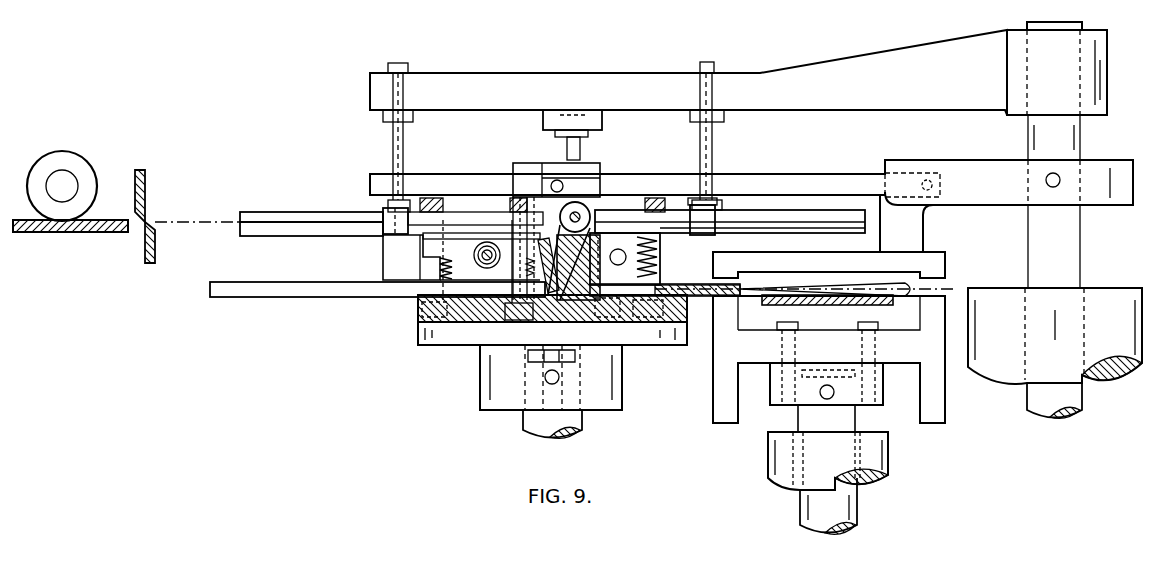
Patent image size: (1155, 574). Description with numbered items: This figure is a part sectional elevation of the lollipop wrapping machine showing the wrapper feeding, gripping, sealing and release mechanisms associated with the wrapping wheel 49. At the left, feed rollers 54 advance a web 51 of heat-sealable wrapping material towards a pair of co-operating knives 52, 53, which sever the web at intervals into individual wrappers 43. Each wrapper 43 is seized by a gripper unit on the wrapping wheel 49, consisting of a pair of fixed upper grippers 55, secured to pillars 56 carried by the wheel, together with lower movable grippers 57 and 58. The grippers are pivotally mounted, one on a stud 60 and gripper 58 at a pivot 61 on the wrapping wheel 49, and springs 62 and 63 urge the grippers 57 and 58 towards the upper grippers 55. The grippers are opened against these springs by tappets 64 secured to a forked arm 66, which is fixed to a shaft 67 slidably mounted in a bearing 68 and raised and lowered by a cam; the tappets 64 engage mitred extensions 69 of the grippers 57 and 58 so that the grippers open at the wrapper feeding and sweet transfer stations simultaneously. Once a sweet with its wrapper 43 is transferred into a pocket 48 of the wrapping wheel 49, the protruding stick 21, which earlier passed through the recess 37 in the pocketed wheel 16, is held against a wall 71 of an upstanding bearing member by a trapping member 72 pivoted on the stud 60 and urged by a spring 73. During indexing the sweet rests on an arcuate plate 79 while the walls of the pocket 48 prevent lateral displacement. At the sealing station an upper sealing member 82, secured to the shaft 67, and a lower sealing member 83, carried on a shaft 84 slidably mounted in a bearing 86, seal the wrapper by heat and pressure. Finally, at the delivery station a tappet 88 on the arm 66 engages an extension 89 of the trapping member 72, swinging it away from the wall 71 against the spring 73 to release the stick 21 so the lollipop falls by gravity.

The wheel 16 is at (850, 185).
The stick 21 is at (578, 302).
The recess 37 is at (553, 180).
The wrapper 43 is at (195, 218).
The pocket 48 is at (290, 297).
The wrapping wheel 49 is at (467, 308).
The web 51 is at (133, 226).
The knife 52 is at (141, 174).
The knife 53 is at (153, 252).
The feed rollers 54 is at (74, 180).
The upper gripper 55 is at (305, 217).
The pillar 56 is at (514, 240).
The lower movable gripper 57 is at (332, 230).
The lower movable gripper 58 is at (812, 226).
The stud 60 is at (481, 245).
The pivot 61 is at (583, 214).
The spring 62 is at (438, 267).
The spring 63 is at (657, 262).
The tappet 64 is at (400, 185).
The forked arm 66 is at (640, 85).
The shaft 67 is at (1065, 142).
The bearing 68 is at (1105, 290).
The mitred extension 69 is at (393, 220).
The wall 71 is at (618, 367).
The trapping member 72 is at (642, 313).
The spring 73 is at (505, 313).
The arcuate plate 79 is at (830, 303).
The upper sealing member 82 is at (935, 262).
The lower sealing member 83 is at (927, 302).
The shaft 84 is at (860, 510).
The bearing 86 is at (870, 455).
The tappet 88 is at (580, 150).
The extension 89 is at (522, 170).